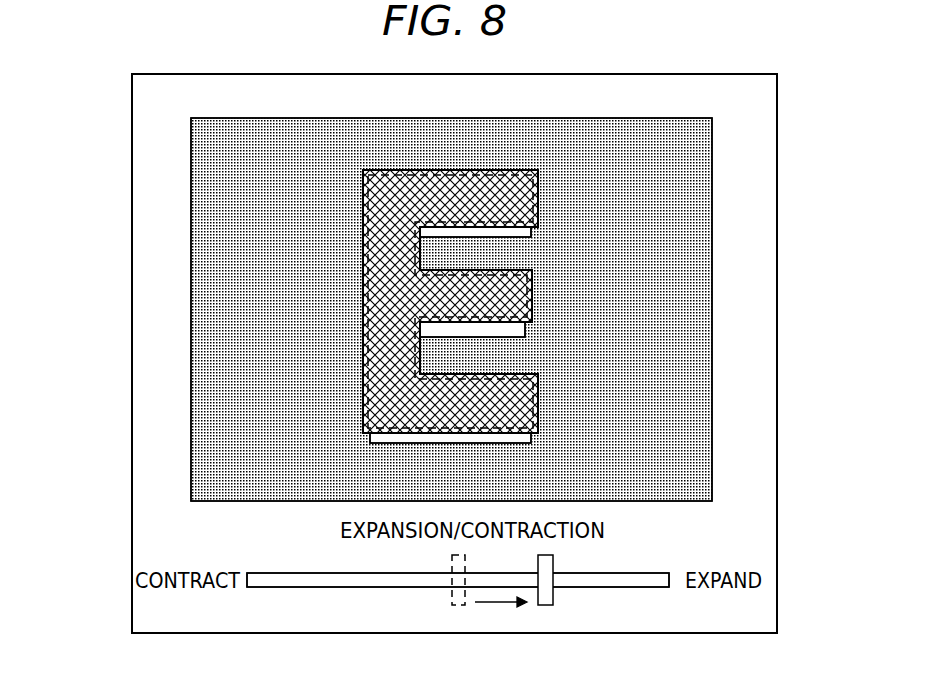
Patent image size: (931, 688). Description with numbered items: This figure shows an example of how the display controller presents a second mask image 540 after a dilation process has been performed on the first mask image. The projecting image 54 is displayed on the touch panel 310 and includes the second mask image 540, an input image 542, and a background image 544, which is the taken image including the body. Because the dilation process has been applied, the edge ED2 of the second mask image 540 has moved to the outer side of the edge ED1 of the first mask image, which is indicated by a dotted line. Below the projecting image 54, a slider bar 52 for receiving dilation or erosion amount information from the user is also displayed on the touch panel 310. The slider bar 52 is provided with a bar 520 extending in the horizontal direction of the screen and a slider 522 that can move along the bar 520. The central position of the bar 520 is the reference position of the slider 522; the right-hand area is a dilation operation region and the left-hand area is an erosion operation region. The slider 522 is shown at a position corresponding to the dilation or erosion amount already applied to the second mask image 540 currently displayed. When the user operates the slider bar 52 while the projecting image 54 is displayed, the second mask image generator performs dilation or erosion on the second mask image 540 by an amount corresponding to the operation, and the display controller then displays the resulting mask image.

The touch panel 310 is at (132, 338).
The projecting image 54 is at (712, 302).
The background image 544 is at (688, 210).
The second mask image 540 is at (433, 170).
The edge of the first mask image ED1 is at (372, 172).
The input image 542 is at (531, 180).
The edge of the second mask image ED2 is at (476, 246).
The slider bar 52 is at (614, 603).
The bar 520 is at (360, 588).
The slider 522 is at (548, 605).